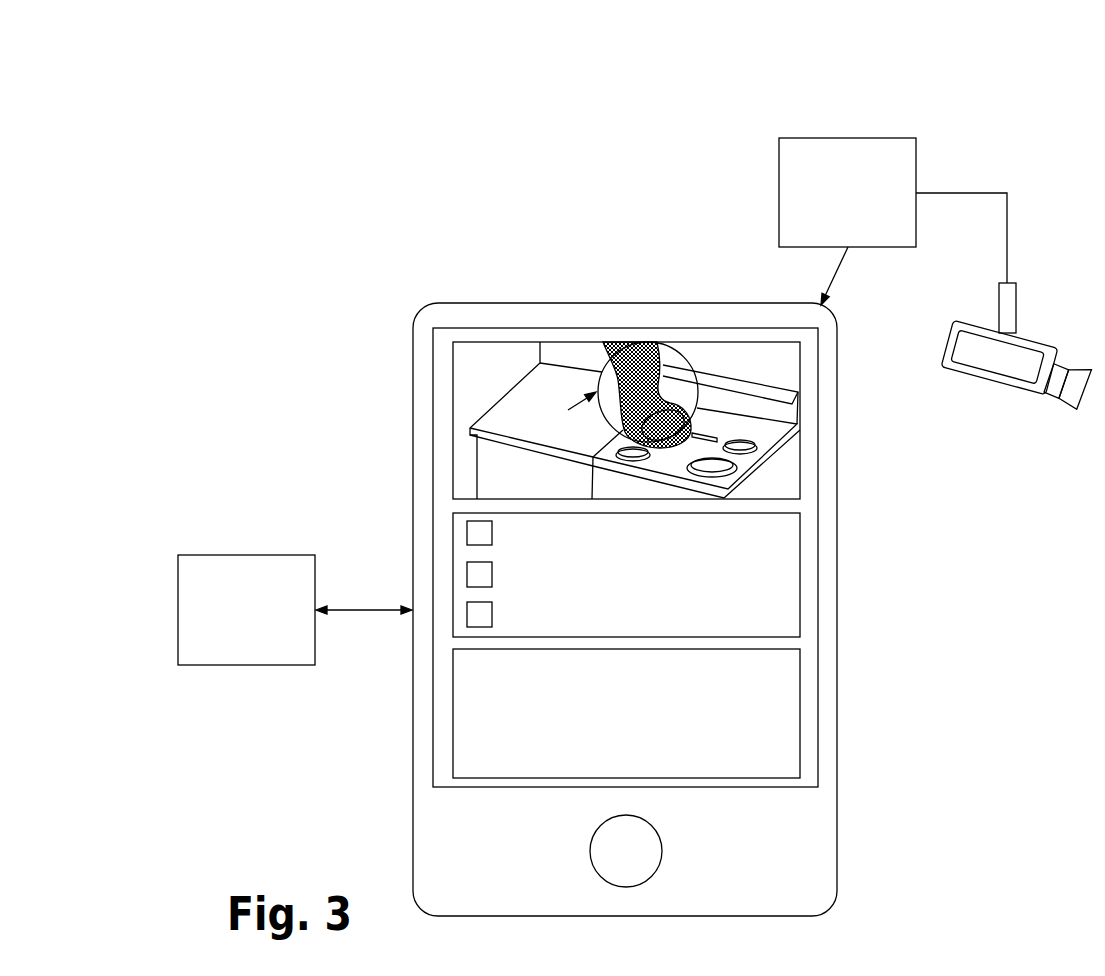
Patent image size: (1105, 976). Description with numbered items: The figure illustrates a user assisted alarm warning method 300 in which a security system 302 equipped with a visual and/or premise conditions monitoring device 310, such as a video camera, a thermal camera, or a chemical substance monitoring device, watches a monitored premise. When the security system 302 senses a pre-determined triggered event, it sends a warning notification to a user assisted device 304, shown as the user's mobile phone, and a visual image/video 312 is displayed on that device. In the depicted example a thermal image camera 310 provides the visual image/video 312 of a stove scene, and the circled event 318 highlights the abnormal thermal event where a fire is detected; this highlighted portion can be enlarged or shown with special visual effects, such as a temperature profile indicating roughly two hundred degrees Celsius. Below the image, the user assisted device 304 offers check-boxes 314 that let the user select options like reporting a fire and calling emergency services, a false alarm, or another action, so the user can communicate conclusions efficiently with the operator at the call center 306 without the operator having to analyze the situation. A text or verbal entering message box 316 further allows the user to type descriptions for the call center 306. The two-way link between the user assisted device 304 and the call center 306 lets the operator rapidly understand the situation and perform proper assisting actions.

The user assisted alarm warning method 300 is at (1070, 44).
The security system 302 is at (848, 126).
The user assisted device 304 is at (644, 268).
The call center 306 is at (247, 555).
The visual and/or premise conditions monitoring device 310 is at (1022, 407).
The visual image/video 312 is at (800, 462).
The check-boxes 314 is at (800, 542).
The text or verbal entering message box 316 is at (800, 683).
The circled event 318 is at (690, 359).